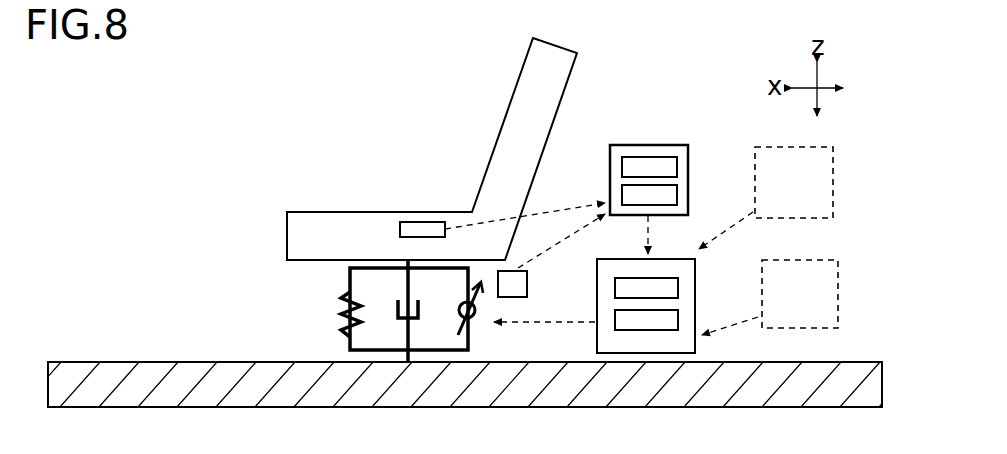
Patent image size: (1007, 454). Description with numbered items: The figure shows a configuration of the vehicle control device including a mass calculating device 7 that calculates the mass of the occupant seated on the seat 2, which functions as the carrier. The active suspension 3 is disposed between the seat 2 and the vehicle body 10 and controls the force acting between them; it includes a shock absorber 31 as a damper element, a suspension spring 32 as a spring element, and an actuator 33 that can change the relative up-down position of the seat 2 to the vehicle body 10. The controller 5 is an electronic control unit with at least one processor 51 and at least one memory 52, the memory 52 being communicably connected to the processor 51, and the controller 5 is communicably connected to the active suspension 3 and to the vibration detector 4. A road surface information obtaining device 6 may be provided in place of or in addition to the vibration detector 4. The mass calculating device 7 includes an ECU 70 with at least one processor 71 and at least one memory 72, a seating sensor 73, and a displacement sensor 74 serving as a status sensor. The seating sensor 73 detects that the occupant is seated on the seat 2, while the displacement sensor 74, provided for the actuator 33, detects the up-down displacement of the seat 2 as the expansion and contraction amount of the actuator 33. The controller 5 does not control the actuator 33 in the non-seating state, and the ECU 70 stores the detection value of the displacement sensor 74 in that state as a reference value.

The seat 2 is at (340, 222).
The active suspension 3 is at (307, 322).
The vibration detector 4 is at (818, 185).
The controller 5 is at (596, 300).
The road surface information obtaining device 6 is at (828, 292).
The mass calculating device 7 is at (631, 159).
The vehicle body 10 is at (153, 373).
The shock absorber 31 is at (395, 317).
The suspension spring 32 is at (340, 312).
The actuator 33 is at (476, 318).
The processor 51 is at (672, 288).
The memory 52 is at (672, 319).
The ECU 70 is at (630, 145).
The processor 71 is at (632, 164).
The memory 72 is at (628, 193).
The seating sensor 73 is at (422, 224).
The displacement sensor 74 is at (510, 292).